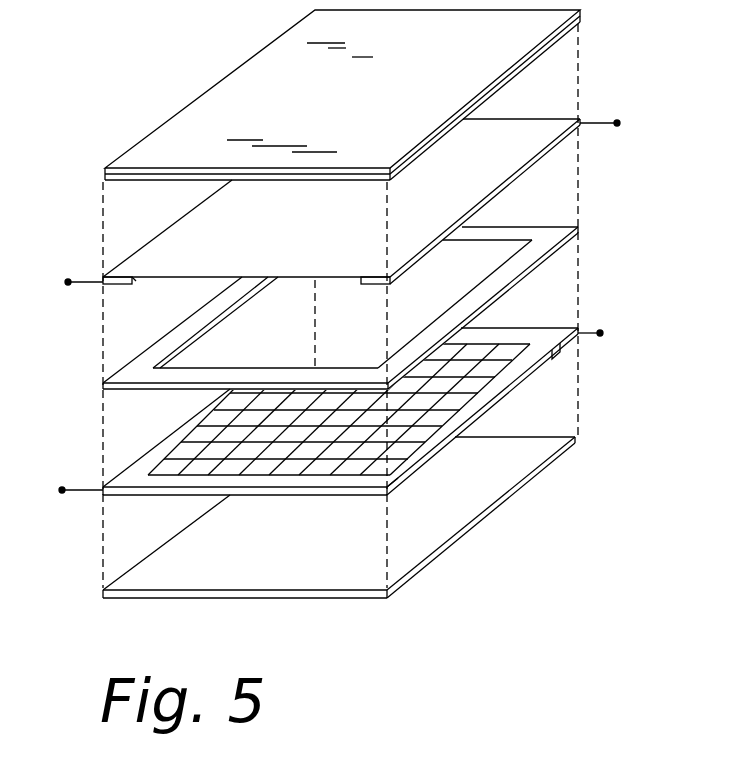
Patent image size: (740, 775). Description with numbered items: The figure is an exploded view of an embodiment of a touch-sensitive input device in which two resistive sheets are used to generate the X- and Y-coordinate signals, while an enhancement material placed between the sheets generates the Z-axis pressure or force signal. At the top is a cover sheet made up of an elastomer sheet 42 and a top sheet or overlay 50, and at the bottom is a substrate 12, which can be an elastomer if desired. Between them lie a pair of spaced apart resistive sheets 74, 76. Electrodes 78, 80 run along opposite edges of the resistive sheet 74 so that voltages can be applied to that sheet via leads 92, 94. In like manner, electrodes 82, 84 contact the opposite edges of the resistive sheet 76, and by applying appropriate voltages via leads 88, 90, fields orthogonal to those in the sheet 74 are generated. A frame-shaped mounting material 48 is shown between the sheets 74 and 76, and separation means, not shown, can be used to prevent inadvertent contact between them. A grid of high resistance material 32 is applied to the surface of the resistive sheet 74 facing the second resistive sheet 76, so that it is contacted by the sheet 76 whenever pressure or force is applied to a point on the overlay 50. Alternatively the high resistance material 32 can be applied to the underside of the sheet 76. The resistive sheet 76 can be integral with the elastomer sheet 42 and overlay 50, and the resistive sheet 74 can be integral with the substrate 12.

The substrate 12 is at (442, 556).
The high resistance material 32 is at (196, 455).
The elastomer sheet 42 is at (563, 40).
The frame-shaped mounting material 48 is at (532, 253).
The overlay 50 is at (353, 102).
The resistive sheet 74 is at (541, 340).
The resistive sheet 76 is at (535, 121).
The electrode 78 is at (556, 354).
The electrode 80 is at (398, 477).
The electrode 82 is at (112, 285).
The electrode 84 is at (373, 285).
The lead 88 is at (615, 121).
The lead 90 is at (70, 283).
The lead 92 is at (606, 333).
The lead 94 is at (65, 491).